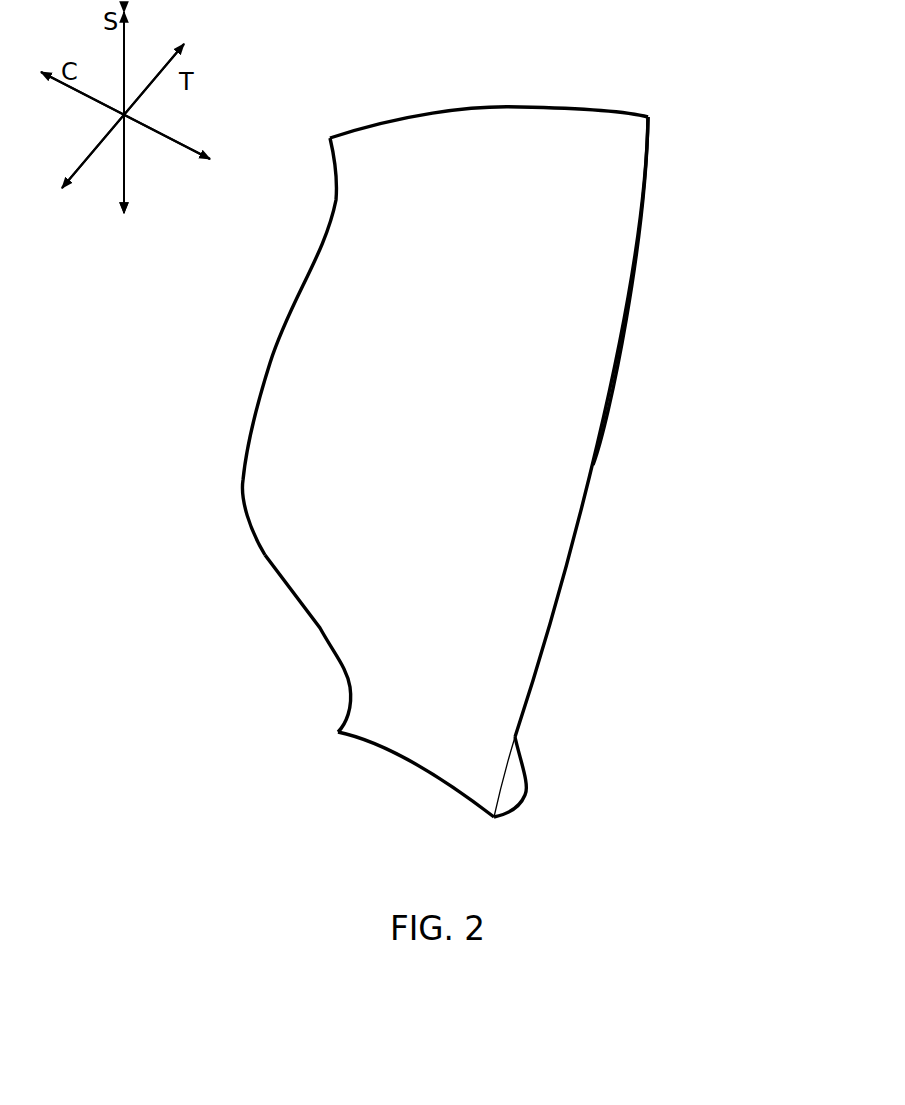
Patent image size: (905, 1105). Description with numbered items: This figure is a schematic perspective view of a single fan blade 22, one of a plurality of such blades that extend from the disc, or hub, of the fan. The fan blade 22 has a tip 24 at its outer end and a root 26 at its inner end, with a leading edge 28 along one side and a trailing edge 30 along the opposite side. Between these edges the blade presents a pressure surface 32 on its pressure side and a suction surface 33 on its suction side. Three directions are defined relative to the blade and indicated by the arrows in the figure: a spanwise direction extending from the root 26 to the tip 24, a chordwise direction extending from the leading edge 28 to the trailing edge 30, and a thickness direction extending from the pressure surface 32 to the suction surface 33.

The fan blade 22 is at (686, 95).
The tip 24 is at (527, 105).
The root 26 is at (508, 780).
The leading edge 28 is at (244, 451).
The trailing edge 30 is at (593, 465).
The pressure surface 32 is at (357, 578).
The suction surface 33 is at (662, 280).